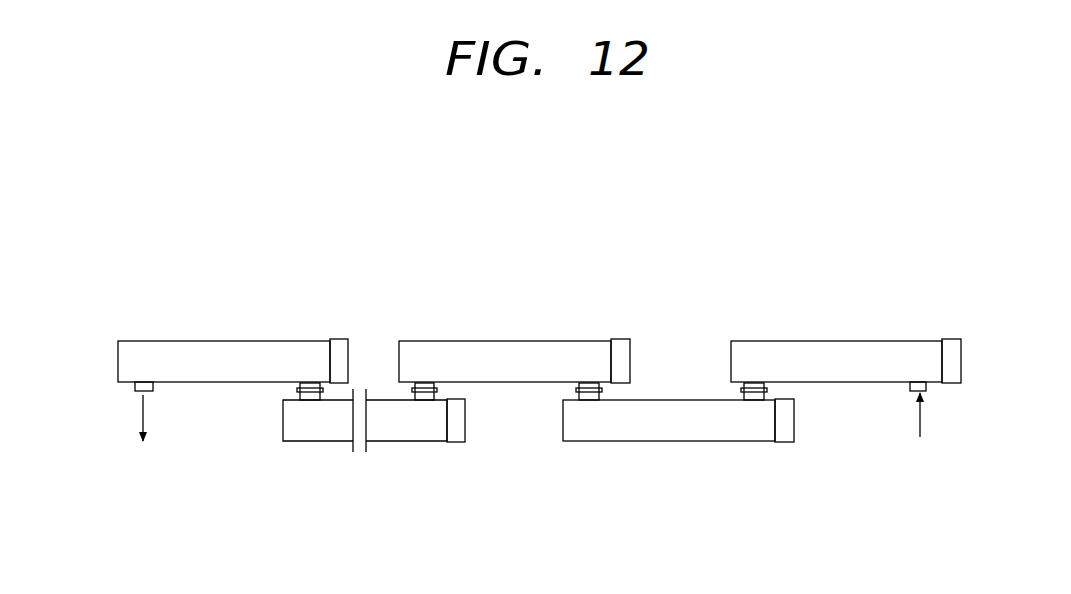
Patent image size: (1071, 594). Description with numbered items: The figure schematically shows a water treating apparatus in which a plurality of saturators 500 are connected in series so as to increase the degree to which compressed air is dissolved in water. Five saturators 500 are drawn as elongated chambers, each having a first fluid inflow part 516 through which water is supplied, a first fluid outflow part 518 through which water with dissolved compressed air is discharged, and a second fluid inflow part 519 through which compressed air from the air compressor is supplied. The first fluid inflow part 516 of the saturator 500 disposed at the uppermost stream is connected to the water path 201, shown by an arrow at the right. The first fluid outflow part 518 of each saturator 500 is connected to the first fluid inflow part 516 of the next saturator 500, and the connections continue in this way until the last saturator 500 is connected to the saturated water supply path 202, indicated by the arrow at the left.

The saturator 500 is at (214, 337).
The first fluid inflow part 516 is at (307, 383).
The first fluid outflow part 518 is at (135, 386).
The second fluid inflow part 519 is at (338, 345).
The water path 201 is at (921, 413).
The saturated water supply path 202 is at (147, 413).